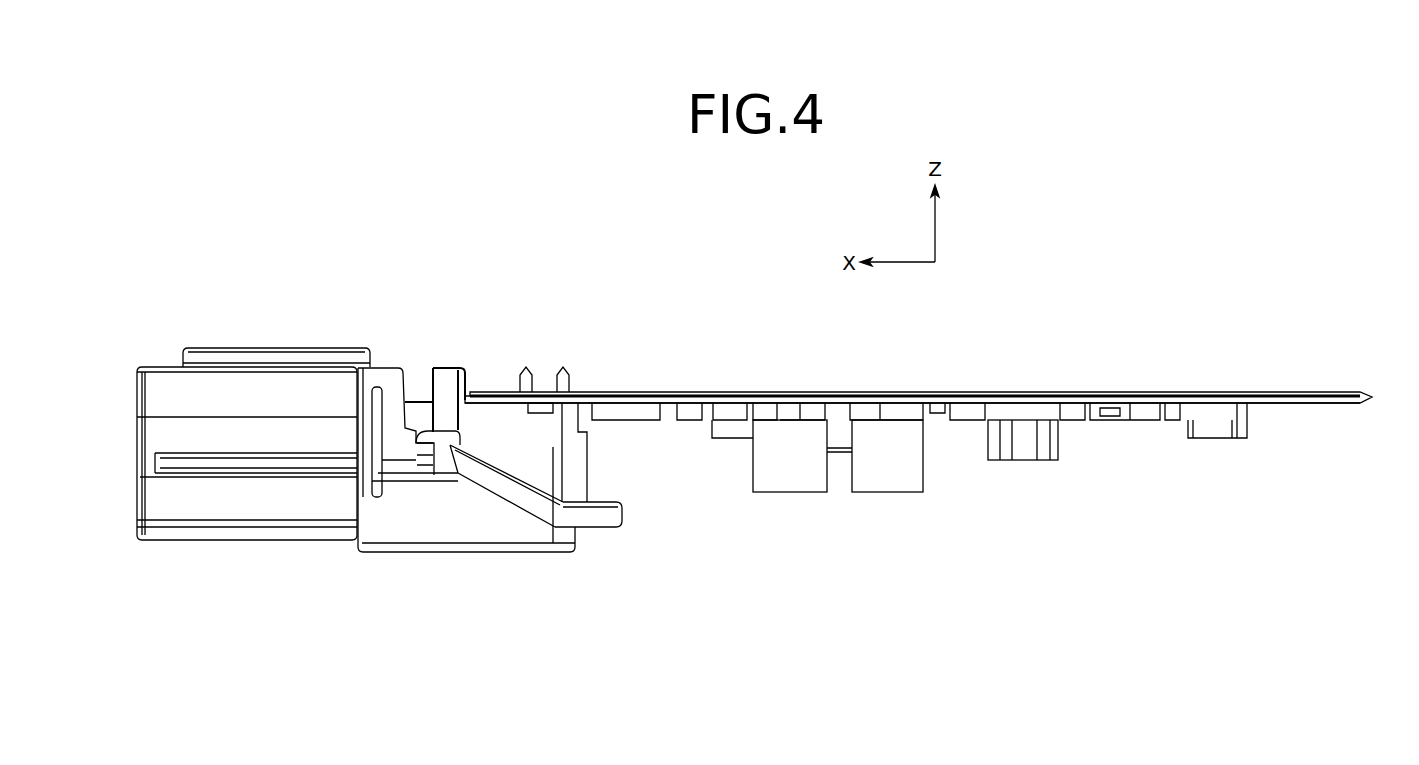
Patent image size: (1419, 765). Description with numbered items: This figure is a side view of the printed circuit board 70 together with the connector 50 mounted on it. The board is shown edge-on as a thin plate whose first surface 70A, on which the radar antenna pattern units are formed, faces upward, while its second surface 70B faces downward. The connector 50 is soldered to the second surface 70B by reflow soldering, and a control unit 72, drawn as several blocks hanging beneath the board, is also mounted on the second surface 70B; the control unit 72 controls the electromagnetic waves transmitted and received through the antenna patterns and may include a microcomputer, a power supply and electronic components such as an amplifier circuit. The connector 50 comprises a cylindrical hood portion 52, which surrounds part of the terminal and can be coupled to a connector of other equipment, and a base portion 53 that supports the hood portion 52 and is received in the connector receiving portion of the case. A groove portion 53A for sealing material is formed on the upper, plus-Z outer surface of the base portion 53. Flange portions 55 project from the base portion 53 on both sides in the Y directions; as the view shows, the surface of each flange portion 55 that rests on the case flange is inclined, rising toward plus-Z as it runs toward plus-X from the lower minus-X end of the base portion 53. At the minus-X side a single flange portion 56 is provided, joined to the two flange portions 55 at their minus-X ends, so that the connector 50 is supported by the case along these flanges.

The connector 50 is at (168, 362).
The hood portion 52 is at (253, 505).
The base portion 53 is at (450, 552).
The groove portion 53A is at (420, 402).
The flange portion 55 is at (512, 490).
The flange portion 56 is at (601, 517).
The printed circuit board 70 is at (926, 401).
The first surface 70A is at (1232, 392).
The second surface 70B is at (1290, 404).
The control unit 72 is at (783, 483).